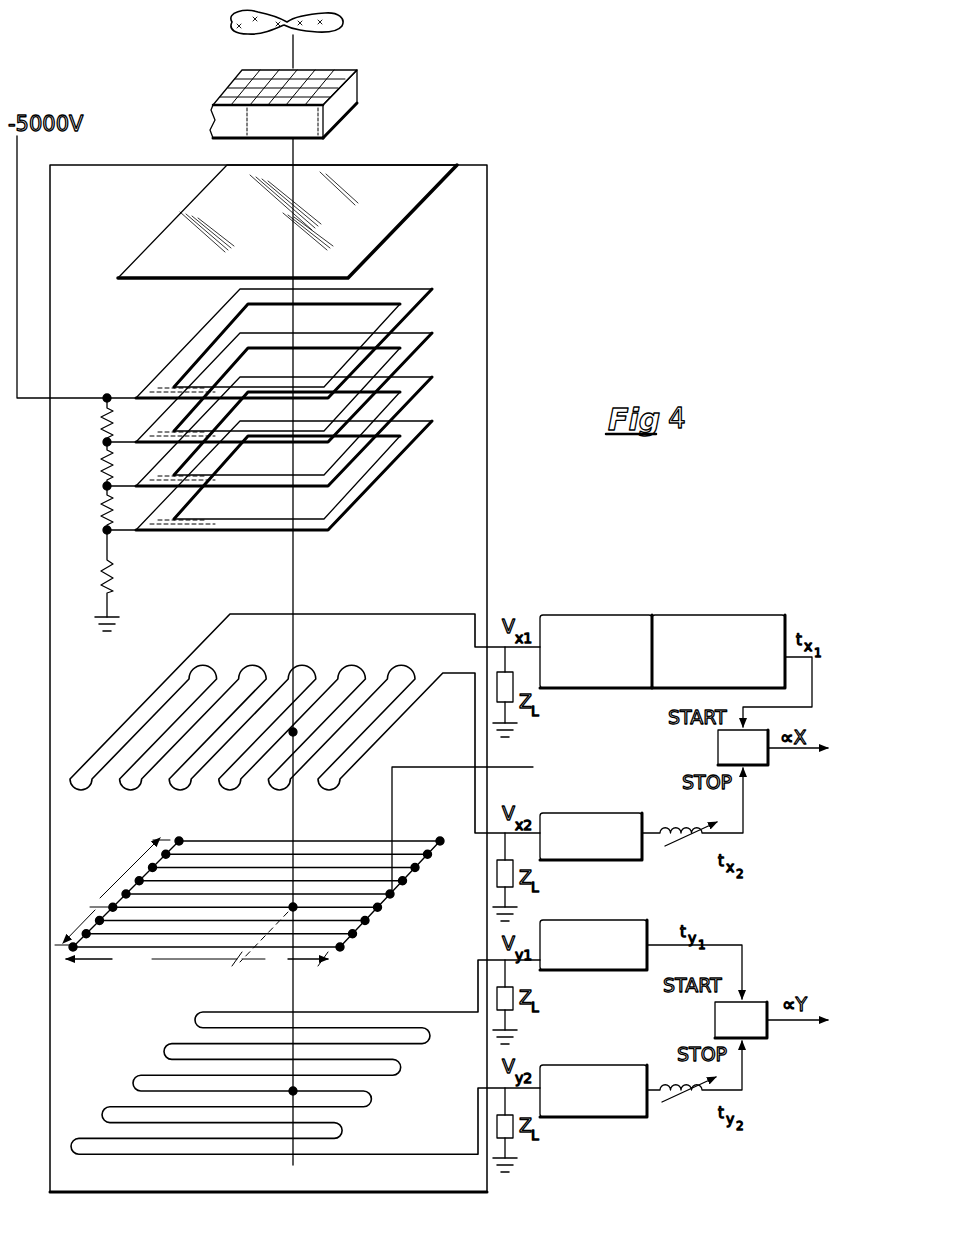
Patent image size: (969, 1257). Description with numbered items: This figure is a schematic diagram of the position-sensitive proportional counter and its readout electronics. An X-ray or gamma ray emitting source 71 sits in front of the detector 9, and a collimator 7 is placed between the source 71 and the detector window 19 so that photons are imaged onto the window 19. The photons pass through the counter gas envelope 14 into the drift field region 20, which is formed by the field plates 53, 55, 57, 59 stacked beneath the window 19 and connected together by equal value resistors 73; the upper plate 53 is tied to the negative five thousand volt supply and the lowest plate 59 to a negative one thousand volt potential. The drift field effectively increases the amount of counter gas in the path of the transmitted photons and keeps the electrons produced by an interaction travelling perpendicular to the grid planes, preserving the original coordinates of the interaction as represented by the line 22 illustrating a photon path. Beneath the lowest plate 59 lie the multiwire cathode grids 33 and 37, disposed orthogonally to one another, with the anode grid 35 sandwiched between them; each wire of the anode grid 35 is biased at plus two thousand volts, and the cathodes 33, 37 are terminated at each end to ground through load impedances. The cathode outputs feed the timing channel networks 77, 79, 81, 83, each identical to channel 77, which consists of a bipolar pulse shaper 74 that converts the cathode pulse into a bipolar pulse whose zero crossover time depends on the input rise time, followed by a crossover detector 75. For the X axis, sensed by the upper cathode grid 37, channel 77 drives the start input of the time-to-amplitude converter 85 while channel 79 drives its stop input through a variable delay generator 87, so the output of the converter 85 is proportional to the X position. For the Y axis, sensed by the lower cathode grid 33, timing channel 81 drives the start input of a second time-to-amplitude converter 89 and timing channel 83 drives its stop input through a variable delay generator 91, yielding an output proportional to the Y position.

The X-ray or gamma ray emitting source 71 is at (343, 22).
The collimator 7 is at (350, 96).
The detector 9 is at (305, 678).
The counter gas envelope 14 is at (488, 309).
The detector window 19 is at (287, 221).
The photon path 22 is at (293, 190).
The drift field region 20 is at (304, 404).
The upper field plate 53 is at (432, 289).
The field plate 55 is at (432, 333).
The field plate 57 is at (432, 377).
The lowest field plate 59 is at (432, 421).
The equal value resistors 73 is at (100, 513).
The upper cathode grid 37 is at (377, 718).
The anode grid 35 is at (330, 855).
The lower cathode grid 33 is at (358, 1028).
The timing channel network 77 is at (671, 627).
The bipolar pulse shaper 74 is at (548, 613).
The crossover detector 75 is at (786, 615).
The timing channel network 79 is at (620, 814).
The timing channel network 81 is at (622, 920).
The timing channel network 83 is at (624, 1065).
The time-to-amplitude converter 85 is at (766, 767).
The variable delay generator 87 is at (685, 842).
The time-to-amplitude converter 89 is at (757, 1001).
The variable delay generator 91 is at (685, 1106).